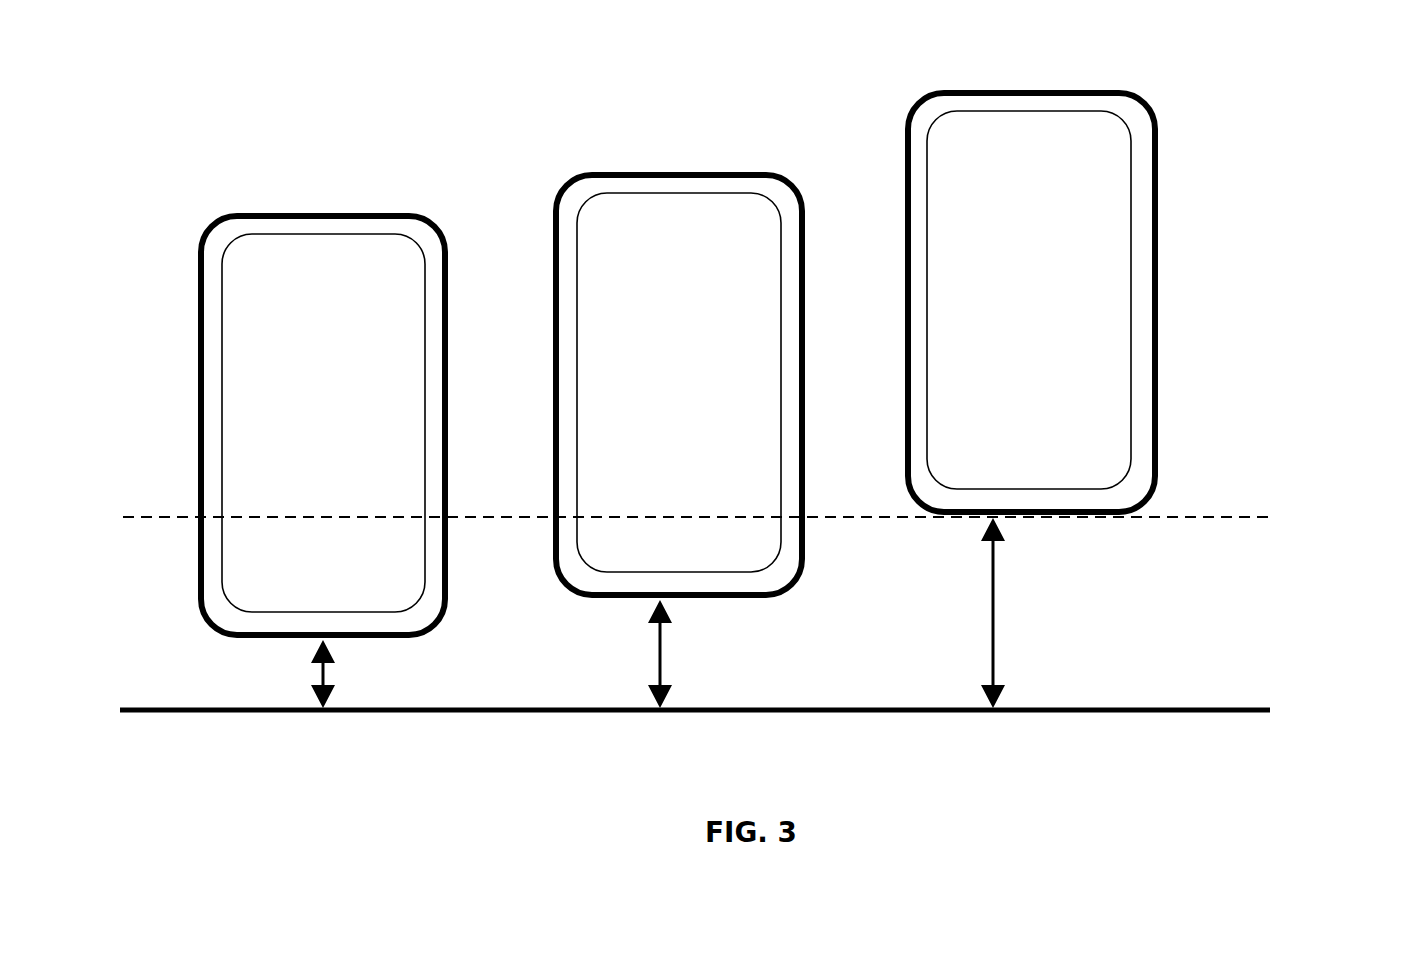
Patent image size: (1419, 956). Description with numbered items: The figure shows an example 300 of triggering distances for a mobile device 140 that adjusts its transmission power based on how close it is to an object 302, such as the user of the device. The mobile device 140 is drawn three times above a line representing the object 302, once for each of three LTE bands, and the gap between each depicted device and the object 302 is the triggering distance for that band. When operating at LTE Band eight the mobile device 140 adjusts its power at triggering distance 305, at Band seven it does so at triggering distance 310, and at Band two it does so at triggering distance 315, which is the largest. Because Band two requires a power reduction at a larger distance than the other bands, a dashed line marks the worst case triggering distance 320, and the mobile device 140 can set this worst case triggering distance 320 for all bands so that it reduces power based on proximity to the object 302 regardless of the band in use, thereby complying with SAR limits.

The triggering distance diagram 300 is at (1325, 80).
The mobile device 140 is at (1158, 240).
The triggering distance 305 is at (327, 674).
The triggering distance 310 is at (664, 648).
The triggering distance 315 is at (997, 568).
The worst case triggering distance 320 is at (1268, 519).
The object 302 is at (1215, 708).